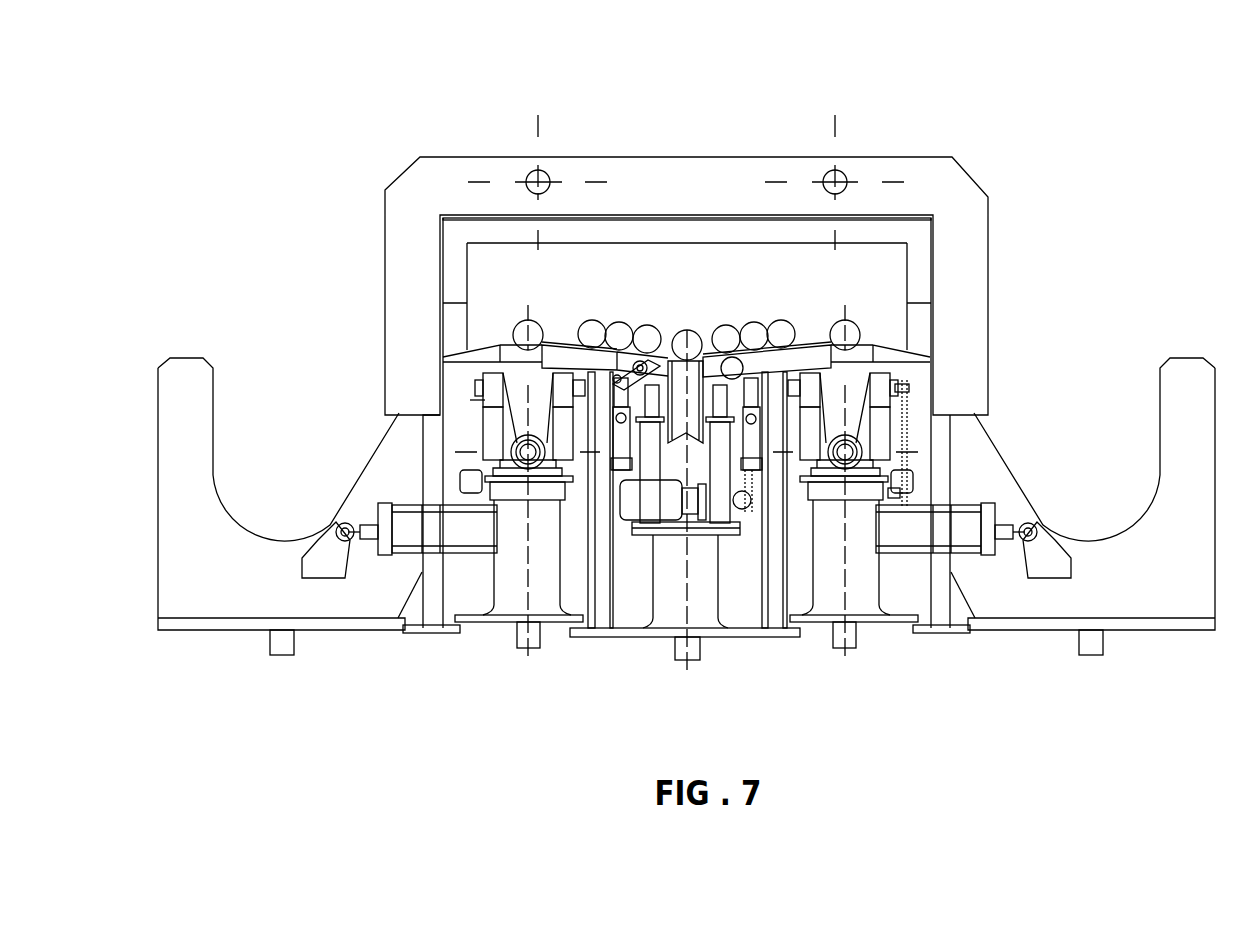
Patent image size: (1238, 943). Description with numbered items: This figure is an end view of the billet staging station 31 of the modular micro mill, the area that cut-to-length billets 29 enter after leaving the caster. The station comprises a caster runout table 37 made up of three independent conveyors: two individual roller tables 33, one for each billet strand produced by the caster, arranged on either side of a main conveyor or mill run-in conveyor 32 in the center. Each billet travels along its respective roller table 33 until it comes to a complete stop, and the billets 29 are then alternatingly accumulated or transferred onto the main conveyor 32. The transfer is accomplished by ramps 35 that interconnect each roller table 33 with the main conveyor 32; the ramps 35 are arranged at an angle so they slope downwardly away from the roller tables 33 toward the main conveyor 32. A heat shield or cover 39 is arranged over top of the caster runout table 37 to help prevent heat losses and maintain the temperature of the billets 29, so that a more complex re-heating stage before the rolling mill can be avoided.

The billets 29 is at (540, 322).
The billet staging station 31 is at (996, 138).
The main conveyor or mill run-in conveyor 32 is at (690, 345).
The roller tables 33 is at (502, 340).
The ramps 35 is at (580, 340).
The caster runout table 37 is at (893, 332).
The heat shield or cover 39 is at (988, 277).